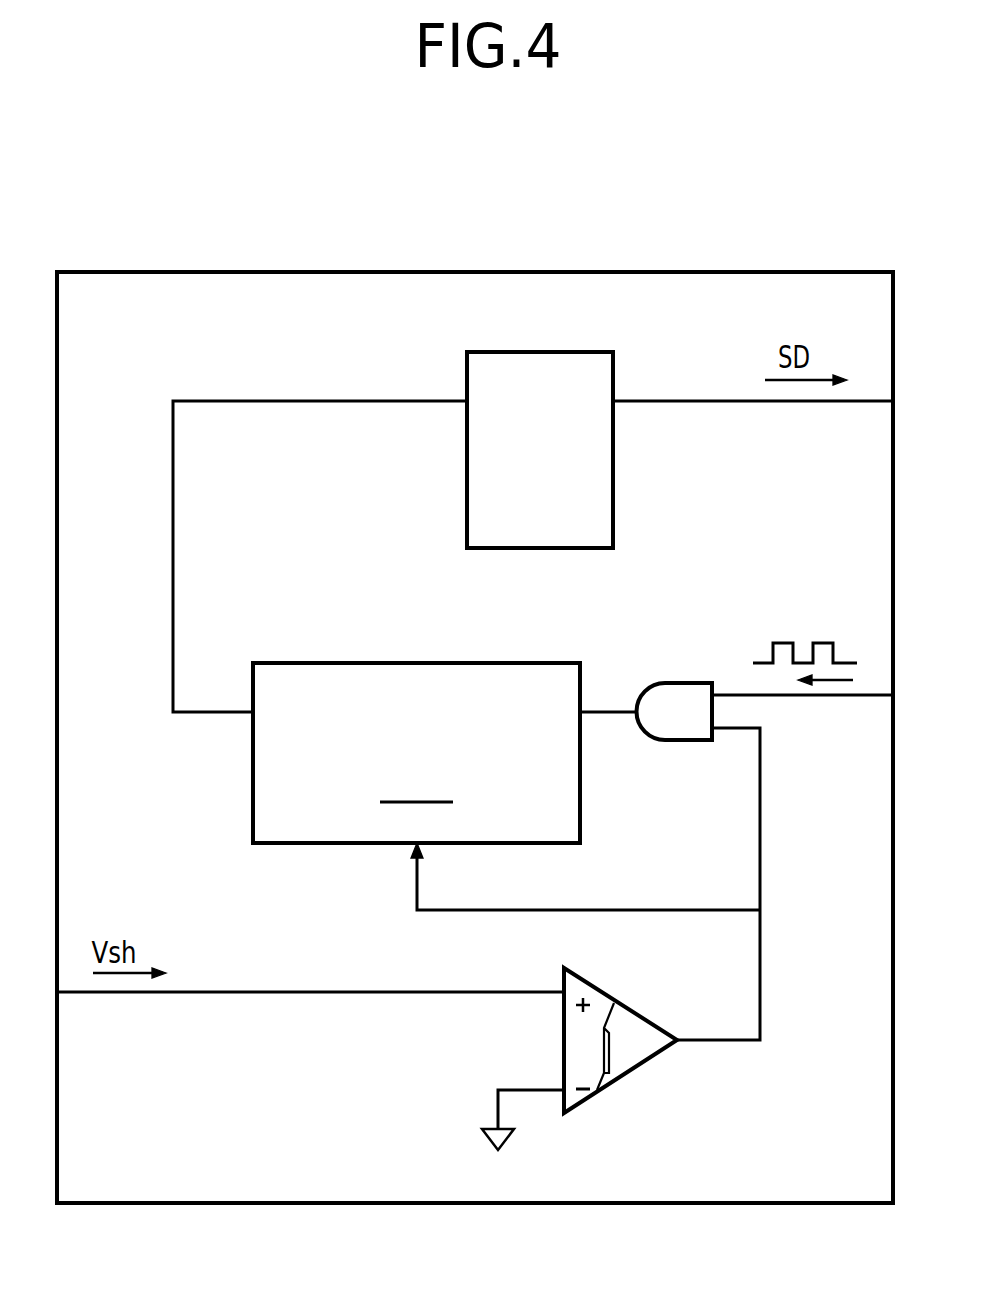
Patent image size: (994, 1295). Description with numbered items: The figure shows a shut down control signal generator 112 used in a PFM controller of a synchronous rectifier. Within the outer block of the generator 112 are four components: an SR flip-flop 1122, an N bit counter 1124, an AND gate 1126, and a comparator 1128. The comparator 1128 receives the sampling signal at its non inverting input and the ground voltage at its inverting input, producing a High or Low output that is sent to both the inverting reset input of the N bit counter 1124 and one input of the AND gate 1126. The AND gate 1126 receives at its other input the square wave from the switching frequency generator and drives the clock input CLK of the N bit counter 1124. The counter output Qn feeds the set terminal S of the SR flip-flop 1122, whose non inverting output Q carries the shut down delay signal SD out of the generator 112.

The shut down control signal generator 112 is at (358, 272).
The SR flip-flop 1122 is at (540, 352).
The N bit counter 1124 is at (362, 663).
The AND gate 1126 is at (680, 683).
The comparator 1128 is at (617, 1000).